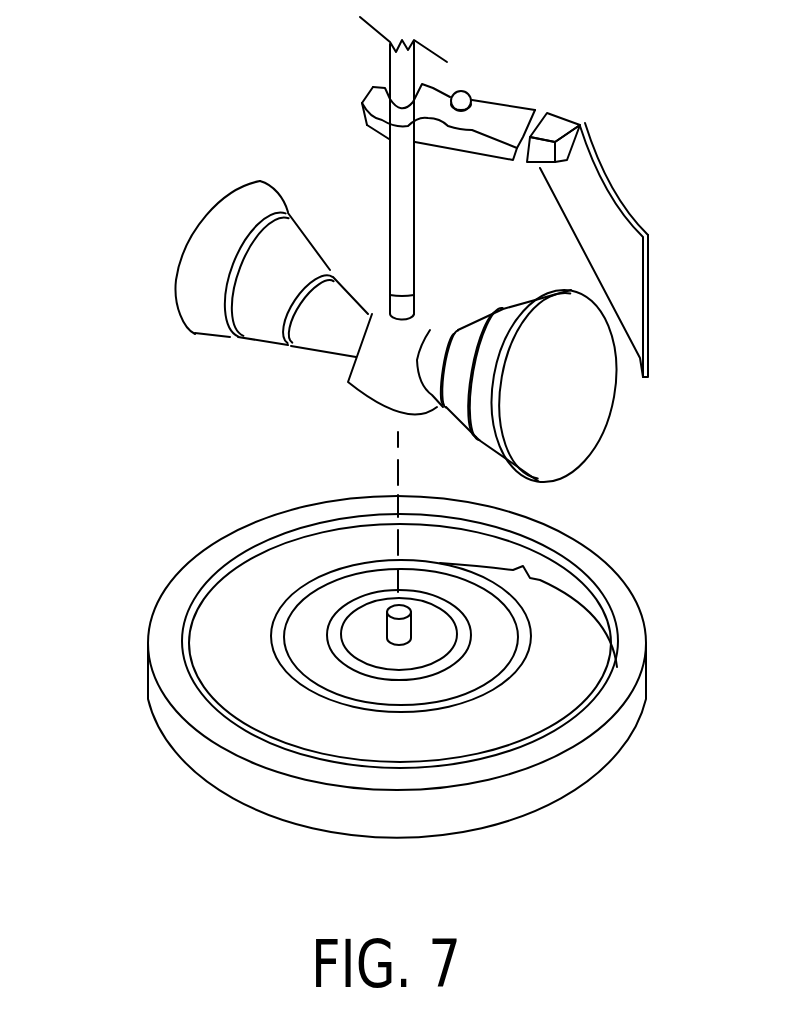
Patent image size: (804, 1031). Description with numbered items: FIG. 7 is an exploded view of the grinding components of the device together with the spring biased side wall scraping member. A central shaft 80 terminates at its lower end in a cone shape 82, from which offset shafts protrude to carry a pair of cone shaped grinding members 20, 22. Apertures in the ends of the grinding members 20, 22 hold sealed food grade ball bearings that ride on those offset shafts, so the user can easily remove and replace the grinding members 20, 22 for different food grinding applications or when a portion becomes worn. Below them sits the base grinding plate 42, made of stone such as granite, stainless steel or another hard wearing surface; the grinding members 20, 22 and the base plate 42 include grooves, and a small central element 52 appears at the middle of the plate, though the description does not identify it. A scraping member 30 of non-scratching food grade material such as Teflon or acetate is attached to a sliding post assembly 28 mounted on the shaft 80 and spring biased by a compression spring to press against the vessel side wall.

The cone shaped grinding member 20 is at (195, 292).
The cone shaped grinding member 22 is at (573, 423).
The sliding post assembly 28 is at (493, 117).
The scraping member 30 is at (628, 282).
The base grinding plate 42 is at (627, 662).
The center post 52 is at (413, 626).
The central shaft 80 is at (402, 194).
The cone shape 82 is at (372, 380).